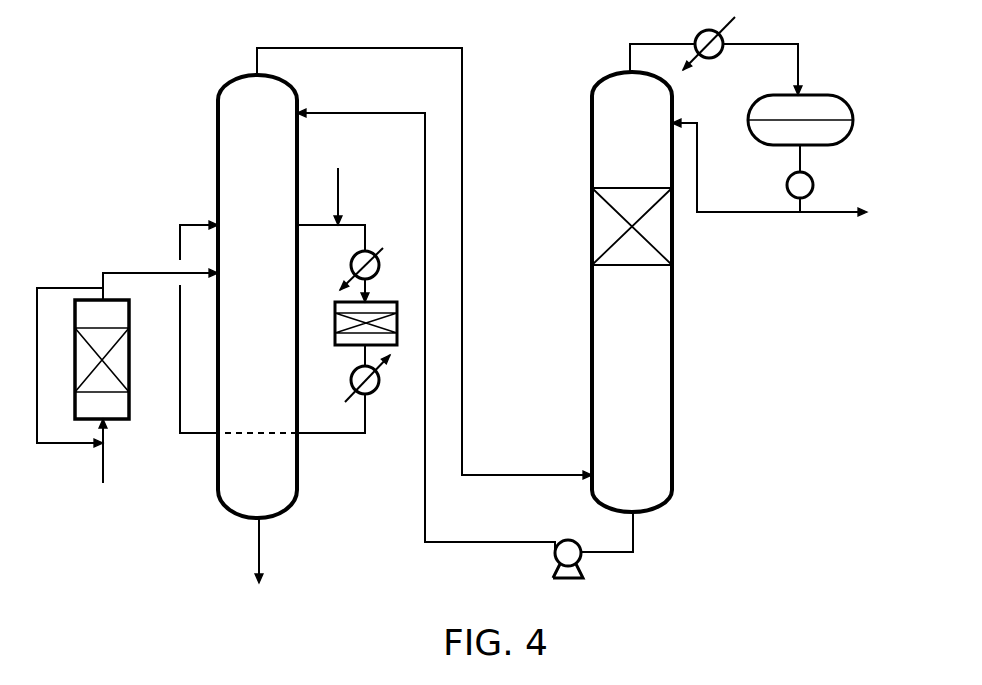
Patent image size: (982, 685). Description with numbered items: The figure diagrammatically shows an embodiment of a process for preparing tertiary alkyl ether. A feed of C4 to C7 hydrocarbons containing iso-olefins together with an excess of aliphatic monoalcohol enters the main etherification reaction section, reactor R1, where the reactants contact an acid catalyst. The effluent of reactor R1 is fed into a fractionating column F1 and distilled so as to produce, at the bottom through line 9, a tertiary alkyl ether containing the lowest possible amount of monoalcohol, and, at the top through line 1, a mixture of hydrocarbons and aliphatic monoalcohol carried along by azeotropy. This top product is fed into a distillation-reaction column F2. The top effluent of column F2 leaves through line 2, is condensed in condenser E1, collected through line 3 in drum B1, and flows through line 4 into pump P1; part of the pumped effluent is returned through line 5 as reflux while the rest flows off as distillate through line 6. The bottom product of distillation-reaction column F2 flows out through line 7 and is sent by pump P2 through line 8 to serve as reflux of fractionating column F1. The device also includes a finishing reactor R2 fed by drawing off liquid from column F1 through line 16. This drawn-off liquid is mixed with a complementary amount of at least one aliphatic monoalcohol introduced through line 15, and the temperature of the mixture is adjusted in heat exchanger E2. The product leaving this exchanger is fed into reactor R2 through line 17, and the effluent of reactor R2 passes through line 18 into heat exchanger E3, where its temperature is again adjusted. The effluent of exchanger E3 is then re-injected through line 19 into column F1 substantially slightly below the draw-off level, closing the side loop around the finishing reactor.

The line 1 is at (359, 47).
The line 2 is at (642, 43).
The line 3 is at (773, 43).
The line 4 is at (806, 153).
The line 5 is at (711, 212).
The line 6 is at (842, 212).
The line 7 is at (620, 552).
The line 8 is at (455, 542).
The line 9 is at (257, 548).
The line 15 is at (338, 185).
The line 16 is at (353, 226).
The line 17 is at (369, 296).
The line 18 is at (360, 352).
The line 19 is at (340, 428).
The fractionating column F1 is at (257, 296).
The distillation-reaction column F2 is at (632, 292).
The reactor R1 is at (116, 359).
The finishing reactor R2 is at (379, 323).
The condenser E1 is at (702, 43).
The heat exchanger E2 is at (374, 269).
The heat exchanger E3 is at (376, 378).
The drum B1 is at (787, 116).
The pump P1 is at (787, 182).
The pump P2 is at (551, 559).